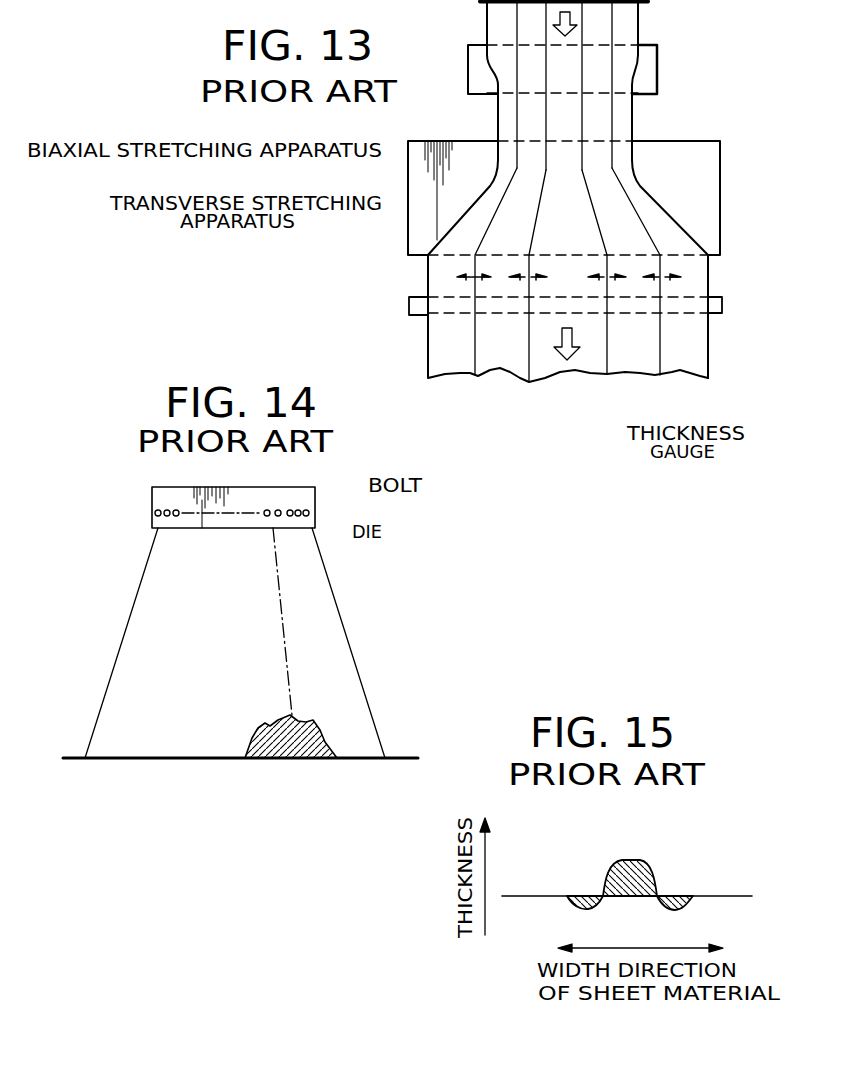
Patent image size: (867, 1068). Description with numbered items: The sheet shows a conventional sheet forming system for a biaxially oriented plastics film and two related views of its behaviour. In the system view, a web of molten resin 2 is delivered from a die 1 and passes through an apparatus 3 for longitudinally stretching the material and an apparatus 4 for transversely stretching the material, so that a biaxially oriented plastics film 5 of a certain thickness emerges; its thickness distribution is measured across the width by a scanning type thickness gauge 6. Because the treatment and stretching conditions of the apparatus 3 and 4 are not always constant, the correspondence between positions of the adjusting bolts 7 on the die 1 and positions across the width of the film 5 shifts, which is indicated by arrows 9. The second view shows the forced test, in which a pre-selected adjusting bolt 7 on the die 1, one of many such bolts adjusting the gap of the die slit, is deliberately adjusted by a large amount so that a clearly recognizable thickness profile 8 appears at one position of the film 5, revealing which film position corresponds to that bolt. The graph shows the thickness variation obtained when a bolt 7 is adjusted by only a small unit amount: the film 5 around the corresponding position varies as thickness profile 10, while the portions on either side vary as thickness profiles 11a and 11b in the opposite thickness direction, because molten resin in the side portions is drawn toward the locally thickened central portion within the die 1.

In FIG. 14, the die 1 is at (315, 508).
In FIG. 13, the web of molten resin 2 is at (640, 27).
In FIG. 13, the apparatus for longitudinally stretching the material 3 is at (468, 84).
In FIG. 13, the apparatus for transversely stretching the material 4 is at (408, 217).
In FIG. 13, the biaxially oriented plastics film 5 is at (708, 278).
In FIG. 13, the scanning type thickness gauge 6 is at (722, 306).
In FIG. 14, the adjusting bolts 7 is at (291, 509).
In FIG. 14, the thickness profile 8 is at (307, 723).
In FIG. 13, the arrows 9 is at (458, 276).
In FIG. 15, the thickness profile 10 is at (643, 864).
In FIG. 15, the thickness profile 11a is at (578, 910).
In FIG. 15, the thickness profile 11b is at (685, 908).